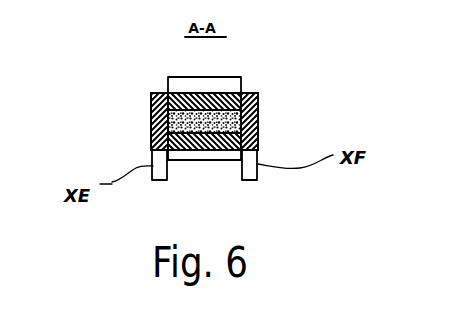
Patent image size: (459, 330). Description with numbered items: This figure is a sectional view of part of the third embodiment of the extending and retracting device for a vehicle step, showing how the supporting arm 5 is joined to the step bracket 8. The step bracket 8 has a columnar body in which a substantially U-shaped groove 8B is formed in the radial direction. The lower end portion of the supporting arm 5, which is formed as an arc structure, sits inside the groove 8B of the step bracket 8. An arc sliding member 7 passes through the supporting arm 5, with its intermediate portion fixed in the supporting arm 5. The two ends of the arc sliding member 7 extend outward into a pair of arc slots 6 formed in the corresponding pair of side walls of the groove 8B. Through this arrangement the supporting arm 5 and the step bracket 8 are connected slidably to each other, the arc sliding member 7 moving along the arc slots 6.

The supporting arm 5 is at (193, 93).
The arc sliding member 7 is at (163, 116).
The arc slots 6 is at (150, 137).
The step bracket 8 is at (259, 157).
The groove 8B is at (220, 168).